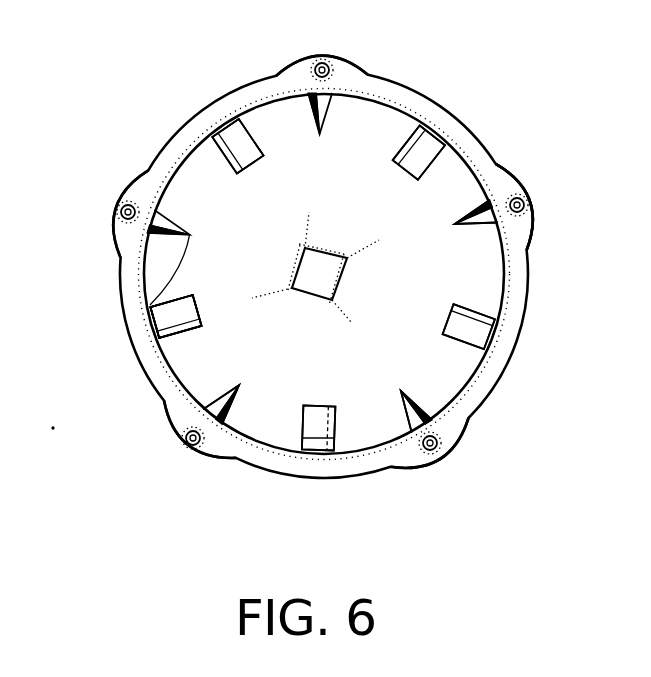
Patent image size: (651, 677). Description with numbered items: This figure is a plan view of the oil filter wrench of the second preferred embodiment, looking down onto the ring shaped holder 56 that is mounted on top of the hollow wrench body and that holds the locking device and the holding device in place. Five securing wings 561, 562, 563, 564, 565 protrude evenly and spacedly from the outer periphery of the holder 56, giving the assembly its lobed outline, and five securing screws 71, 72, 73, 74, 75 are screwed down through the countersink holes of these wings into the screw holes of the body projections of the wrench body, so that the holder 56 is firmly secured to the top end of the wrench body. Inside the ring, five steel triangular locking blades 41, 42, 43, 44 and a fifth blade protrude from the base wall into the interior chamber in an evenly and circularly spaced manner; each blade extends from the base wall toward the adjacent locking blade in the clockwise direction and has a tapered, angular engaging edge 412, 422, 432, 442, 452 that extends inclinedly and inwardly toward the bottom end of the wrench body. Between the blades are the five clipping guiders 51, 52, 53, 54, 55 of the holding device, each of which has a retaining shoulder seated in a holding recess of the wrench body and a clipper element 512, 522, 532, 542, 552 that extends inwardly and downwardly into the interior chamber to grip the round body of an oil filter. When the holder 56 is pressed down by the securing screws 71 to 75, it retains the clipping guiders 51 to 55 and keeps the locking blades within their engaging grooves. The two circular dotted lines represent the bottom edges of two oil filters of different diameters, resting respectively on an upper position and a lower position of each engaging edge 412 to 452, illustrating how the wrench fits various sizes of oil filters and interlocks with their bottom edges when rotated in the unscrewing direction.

The locking blade 41 is at (496, 228).
The locking blade 42 is at (432, 394).
The locking blade 43 is at (348, 108).
The locking blade 44 is at (144, 268).
The engaging edge 412 is at (492, 188).
The engaging edge 422 is at (402, 392).
The engaging edge 432 is at (241, 388).
The engaging edge 442 is at (178, 326).
The engaging edge 452 is at (420, 150).
The clipping guider 51 is at (482, 190).
The clipping guider 52 is at (487, 287).
The clipping guider 53 is at (349, 434).
The clipping guider 54 is at (166, 384).
The clipping guider 55 is at (205, 157).
The holder 56 is at (132, 350).
The clipper element 512 is at (444, 142).
The clipper element 522 is at (468, 316).
The clipper element 532 is at (315, 420).
The clipper element 542 is at (162, 370).
The clipper element 552 is at (240, 147).
The securing wing 561 is at (517, 190).
The securing wing 562 is at (447, 431).
The securing wing 563 is at (200, 450).
The securing wing 564 is at (117, 201).
The securing wing 565 is at (343, 68).
The securing screw 71 is at (527, 204).
The securing screw 72 is at (452, 447).
The securing screw 73 is at (180, 437).
The securing screw 74 is at (123, 226).
The securing screw 75 is at (326, 62).